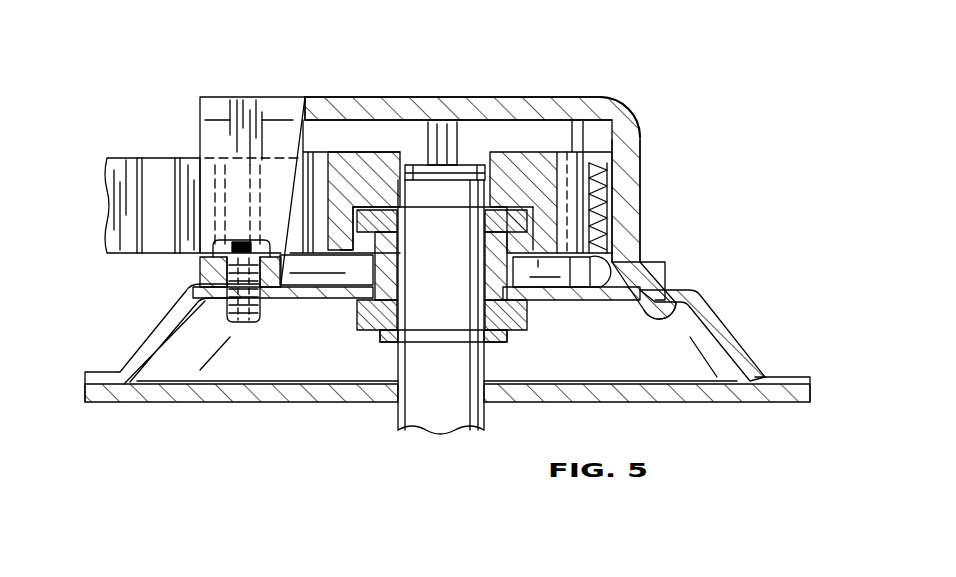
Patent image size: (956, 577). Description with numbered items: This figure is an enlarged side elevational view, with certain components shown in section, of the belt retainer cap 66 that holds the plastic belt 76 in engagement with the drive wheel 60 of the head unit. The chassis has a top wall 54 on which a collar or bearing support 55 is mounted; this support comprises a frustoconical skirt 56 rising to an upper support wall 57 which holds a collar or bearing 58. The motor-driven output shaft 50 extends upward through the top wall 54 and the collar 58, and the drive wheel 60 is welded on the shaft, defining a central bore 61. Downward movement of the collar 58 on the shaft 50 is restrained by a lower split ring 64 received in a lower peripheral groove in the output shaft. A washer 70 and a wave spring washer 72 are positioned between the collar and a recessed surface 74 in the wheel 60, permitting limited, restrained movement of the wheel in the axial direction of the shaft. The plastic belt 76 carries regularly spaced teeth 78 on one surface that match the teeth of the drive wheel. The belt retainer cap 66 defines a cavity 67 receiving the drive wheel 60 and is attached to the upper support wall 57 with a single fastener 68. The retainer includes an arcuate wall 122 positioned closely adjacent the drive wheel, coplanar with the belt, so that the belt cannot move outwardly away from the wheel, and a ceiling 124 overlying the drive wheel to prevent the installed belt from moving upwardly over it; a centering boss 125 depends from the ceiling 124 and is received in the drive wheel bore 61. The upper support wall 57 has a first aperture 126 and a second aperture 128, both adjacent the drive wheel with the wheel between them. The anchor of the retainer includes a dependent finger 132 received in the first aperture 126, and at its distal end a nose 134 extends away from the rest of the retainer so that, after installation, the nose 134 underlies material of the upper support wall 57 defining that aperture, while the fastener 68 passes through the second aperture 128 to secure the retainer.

The output shaft 50 is at (428, 413).
The top wall 54 is at (293, 395).
The bearing support 55 is at (783, 370).
The frustoconical skirt 56 is at (727, 322).
The upper support wall 57 is at (573, 300).
The collar 58 is at (358, 303).
The drive wheel 60 is at (358, 132).
The central bore 61 is at (442, 147).
The lower split ring 64 is at (503, 340).
The belt retainer cap 66 is at (640, 104).
The cavity 67 is at (356, 130).
The fastener 68 is at (217, 247).
The washer 70 is at (390, 220).
The wave spring washer 72 is at (399, 168).
The recessed surface 74 is at (498, 190).
The plastic belt 76 is at (123, 155).
The teeth 78 is at (155, 177).
The arcuate wall 122 is at (633, 195).
The ceiling 124 is at (519, 108).
The centering boss 125 is at (482, 132).
The first aperture 126 is at (668, 280).
The second aperture 128 is at (218, 303).
The dependent finger 132 is at (640, 310).
The nose 134 is at (672, 324).